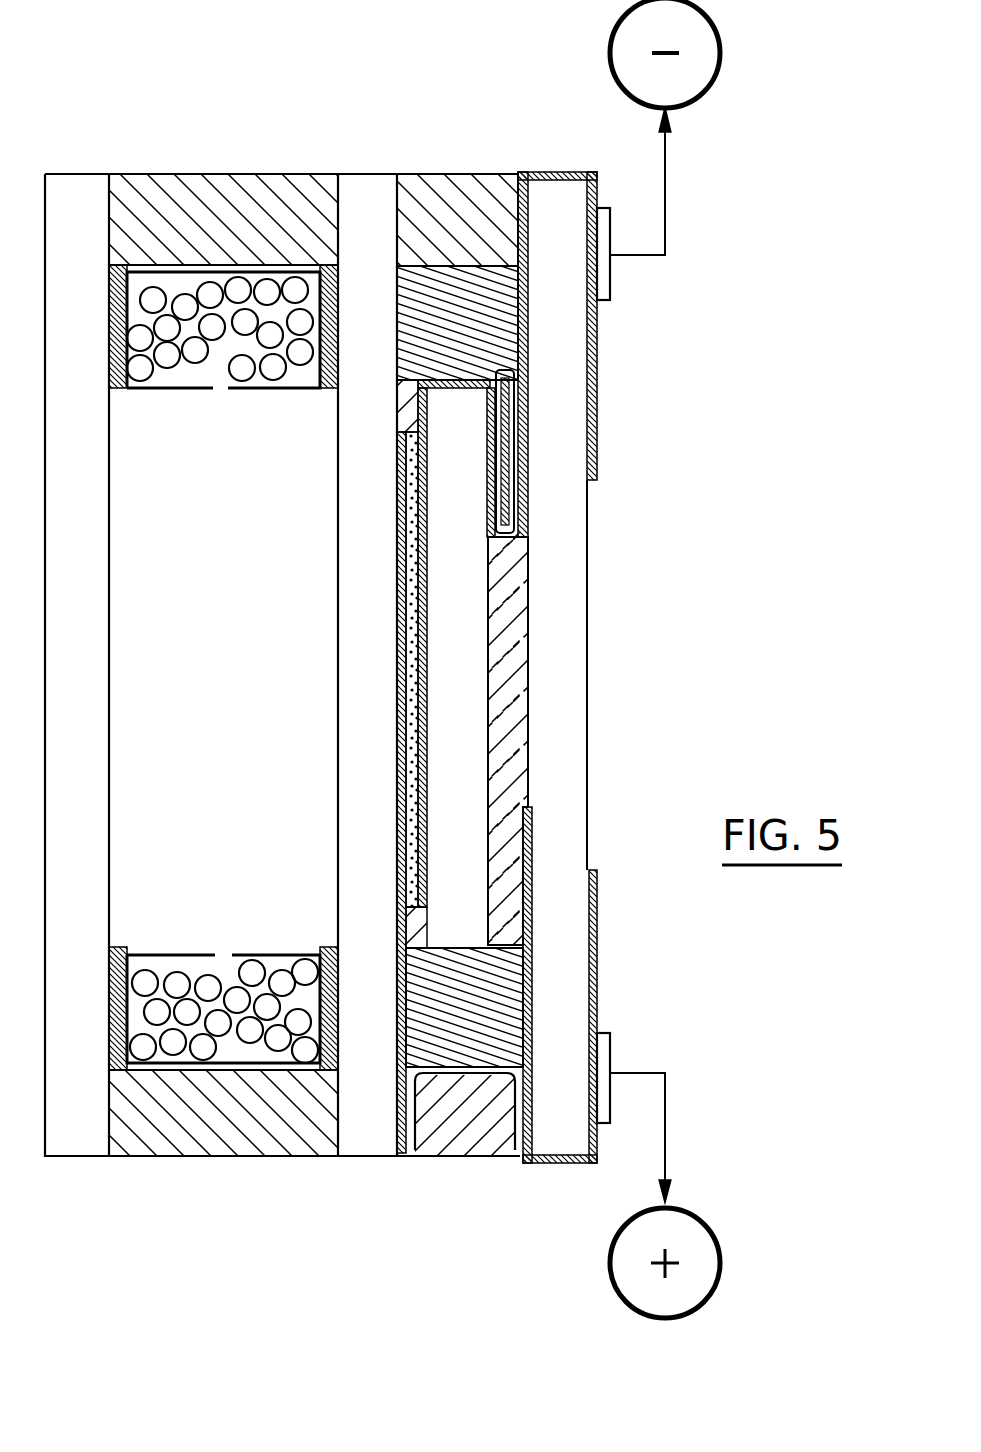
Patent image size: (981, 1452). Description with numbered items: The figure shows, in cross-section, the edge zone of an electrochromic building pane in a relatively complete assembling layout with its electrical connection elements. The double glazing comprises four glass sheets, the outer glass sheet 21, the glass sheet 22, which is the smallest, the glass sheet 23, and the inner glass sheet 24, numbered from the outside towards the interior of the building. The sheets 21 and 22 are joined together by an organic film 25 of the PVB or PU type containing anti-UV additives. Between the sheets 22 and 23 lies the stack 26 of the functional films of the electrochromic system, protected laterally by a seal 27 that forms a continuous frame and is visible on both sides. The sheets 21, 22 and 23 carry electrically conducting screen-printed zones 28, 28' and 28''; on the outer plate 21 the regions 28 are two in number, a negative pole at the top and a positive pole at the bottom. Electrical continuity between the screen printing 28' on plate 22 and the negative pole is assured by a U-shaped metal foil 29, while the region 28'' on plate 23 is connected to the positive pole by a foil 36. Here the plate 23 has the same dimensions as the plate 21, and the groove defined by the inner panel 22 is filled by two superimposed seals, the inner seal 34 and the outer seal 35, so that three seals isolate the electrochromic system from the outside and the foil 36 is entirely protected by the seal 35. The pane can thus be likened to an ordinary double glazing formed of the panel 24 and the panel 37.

The glass sheet 21 is at (573, 740).
The glass sheet 22 is at (470, 627).
The glass sheet 23 is at (339, 698).
The glass sheet 24 is at (82, 768).
The organic film 25 is at (513, 667).
The stack of functional films 26 is at (415, 578).
The seal 27 is at (412, 925).
The screen-printed region 28 is at (543, 771).
The screen-printed zone 28' is at (543, 643).
The screen-printed region 28'' is at (345, 871).
The U-shaped metal foil 29 is at (515, 428).
The inner seal 34 is at (503, 1005).
The outer seal 35 is at (472, 1123).
The foil 36 is at (500, 1070).
The panel 37 is at (605, 1200).